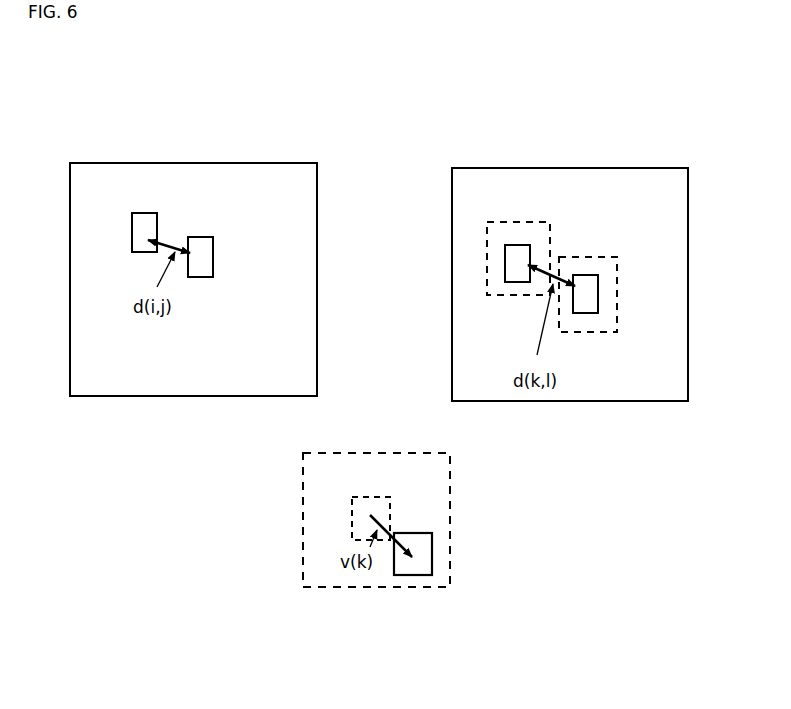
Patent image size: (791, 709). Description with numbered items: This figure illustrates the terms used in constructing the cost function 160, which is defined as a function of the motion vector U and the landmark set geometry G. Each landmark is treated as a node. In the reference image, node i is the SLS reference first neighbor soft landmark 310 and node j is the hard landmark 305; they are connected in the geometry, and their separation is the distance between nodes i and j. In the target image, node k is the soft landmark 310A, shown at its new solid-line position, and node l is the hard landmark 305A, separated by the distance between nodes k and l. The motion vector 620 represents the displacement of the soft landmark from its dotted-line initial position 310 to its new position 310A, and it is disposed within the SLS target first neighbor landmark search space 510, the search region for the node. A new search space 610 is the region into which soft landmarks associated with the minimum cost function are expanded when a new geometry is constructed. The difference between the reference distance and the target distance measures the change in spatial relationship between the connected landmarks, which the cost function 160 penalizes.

The cost function 160 is at (388, 143).
The SLS reference first neighbor soft landmark 310 is at (143, 212).
The hard landmark 305 is at (200, 233).
The SLS target first neighbor landmark search space 510 is at (512, 219).
The new search space 610 is at (586, 253).
The SLS first neighbor soft landmark 310A is at (514, 283).
The hard landmark in target image 305A is at (591, 321).
The motion vector 620 is at (372, 525).